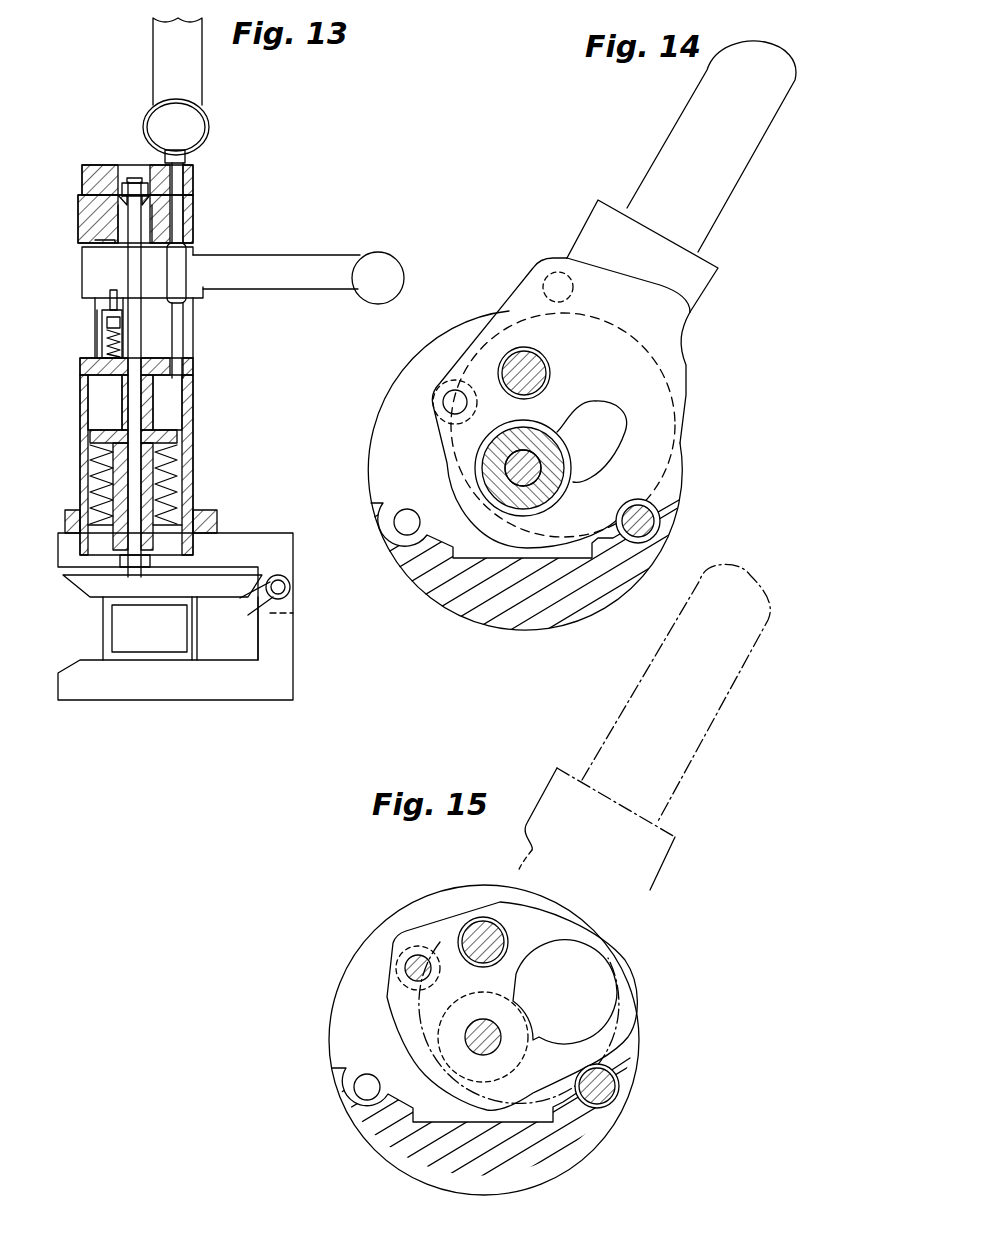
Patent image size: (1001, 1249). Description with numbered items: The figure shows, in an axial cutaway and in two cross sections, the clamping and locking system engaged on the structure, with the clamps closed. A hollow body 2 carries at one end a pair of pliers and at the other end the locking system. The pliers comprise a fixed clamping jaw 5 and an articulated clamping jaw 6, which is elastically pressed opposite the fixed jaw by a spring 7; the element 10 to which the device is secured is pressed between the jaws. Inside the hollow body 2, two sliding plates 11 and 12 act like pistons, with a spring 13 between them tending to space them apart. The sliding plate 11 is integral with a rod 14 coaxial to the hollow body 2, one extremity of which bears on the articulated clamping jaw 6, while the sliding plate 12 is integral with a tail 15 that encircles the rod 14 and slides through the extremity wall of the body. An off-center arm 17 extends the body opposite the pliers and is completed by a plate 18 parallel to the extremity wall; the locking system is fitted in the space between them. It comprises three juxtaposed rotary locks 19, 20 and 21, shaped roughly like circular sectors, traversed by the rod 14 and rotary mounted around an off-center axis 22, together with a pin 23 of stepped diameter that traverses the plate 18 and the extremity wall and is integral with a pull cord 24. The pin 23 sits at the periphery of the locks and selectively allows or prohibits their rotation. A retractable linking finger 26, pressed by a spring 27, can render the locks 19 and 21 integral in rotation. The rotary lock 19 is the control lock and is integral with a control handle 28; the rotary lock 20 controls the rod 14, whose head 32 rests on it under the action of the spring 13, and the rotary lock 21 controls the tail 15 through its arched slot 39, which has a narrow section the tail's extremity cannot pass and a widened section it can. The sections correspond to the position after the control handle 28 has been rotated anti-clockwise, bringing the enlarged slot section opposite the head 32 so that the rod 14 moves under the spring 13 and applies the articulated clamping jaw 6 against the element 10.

In FIG. 13, the hollow body 2 is at (80, 408).
In FIG. 13, the fixed clamping jaw 5 is at (222, 680).
In FIG. 13, the articulated clamping jaw 6 is at (212, 585).
In FIG. 13, the spring 7 is at (265, 622).
In FIG. 13, the element 10 is at (165, 640).
In FIG. 13, the sliding plate 11 is at (100, 535).
In FIG. 13, the sliding plate 12 is at (165, 436).
In FIG. 13, the spring 13 is at (100, 458).
In FIG. 14, the rod 14 is at (528, 473).
In FIG. 15, the rod 14 is at (467, 1047).
In FIG. 13, the tail 15 is at (150, 395).
In FIG. 14, the arm 17 is at (507, 620).
In FIG. 15, the arm 17 is at (413, 1160).
In FIG. 13, the plate 18 is at (97, 165).
In FIG. 13, the rotary lock 19 is at (92, 262).
In FIG. 13, the rotary lock 20 is at (92, 216).
In FIG. 14, the rotary lock 20 is at (668, 390).
In FIG. 13, the rotary lock 21 is at (188, 330).
In FIG. 14, the rotary lock 21 is at (524, 403).
In FIG. 15, the rotary lock 21 is at (403, 1005).
In FIG. 14, the axis 22 is at (516, 358).
In FIG. 15, the axis 22 is at (473, 928).
In FIG. 13, the pin 23 is at (178, 265).
In FIG. 14, the pin 23 is at (650, 528).
In FIG. 15, the pin 23 is at (612, 1095).
In FIG. 13, the pull cord 24 is at (160, 63).
In FIG. 13, the retractable linking finger 26 is at (112, 300).
In FIG. 14, the retractable linking finger 26 is at (453, 402).
In FIG. 15, the retractable linking finger 26 is at (410, 967).
In FIG. 13, the spring 27 is at (102, 340).
In FIG. 13, the control handle 28 is at (312, 290).
In FIG. 14, the control handle 28 is at (660, 167).
In FIG. 15, the control handle 28 is at (690, 748).
In FIG. 14, the head 32 is at (503, 492).
In FIG. 15, the arched slot 39 is at (590, 992).